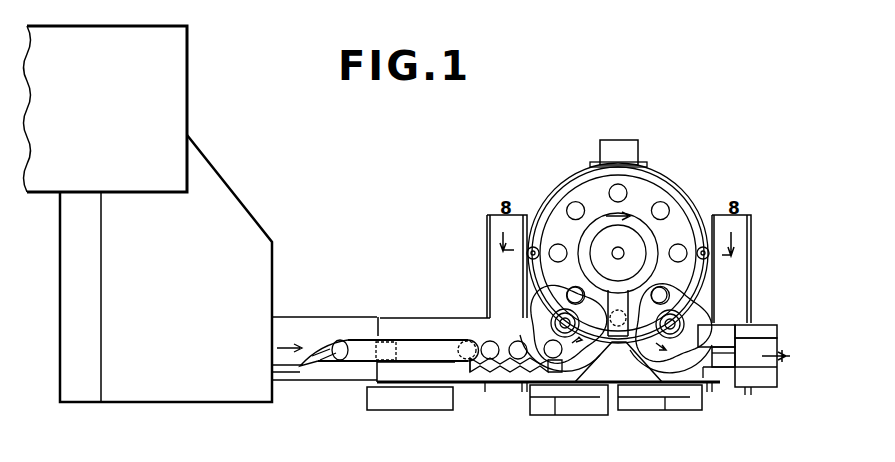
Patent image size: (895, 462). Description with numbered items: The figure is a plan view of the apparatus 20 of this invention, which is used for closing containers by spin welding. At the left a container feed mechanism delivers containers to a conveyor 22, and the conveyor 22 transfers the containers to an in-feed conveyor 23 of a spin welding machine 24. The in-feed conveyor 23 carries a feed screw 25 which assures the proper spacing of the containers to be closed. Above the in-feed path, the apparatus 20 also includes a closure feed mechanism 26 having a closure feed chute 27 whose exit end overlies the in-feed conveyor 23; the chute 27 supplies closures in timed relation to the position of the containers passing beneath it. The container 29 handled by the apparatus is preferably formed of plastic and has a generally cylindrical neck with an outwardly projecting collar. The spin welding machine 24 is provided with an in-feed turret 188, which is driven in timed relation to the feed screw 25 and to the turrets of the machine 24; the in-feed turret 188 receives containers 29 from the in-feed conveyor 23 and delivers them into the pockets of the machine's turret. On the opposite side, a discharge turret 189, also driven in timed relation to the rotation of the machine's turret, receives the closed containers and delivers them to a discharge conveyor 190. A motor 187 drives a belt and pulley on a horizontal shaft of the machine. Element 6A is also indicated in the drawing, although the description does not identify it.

The apparatus 20 is at (407, 218).
The conveyor 22 is at (325, 370).
The in-feed conveyor 23 is at (465, 388).
The spin welding machine 24 is at (686, 183).
The feed screw 25 is at (505, 374).
The closure feed mechanism 26 is at (245, 212).
The closure feed chute 27 is at (415, 340).
The container 29 is at (484, 338).
The in-feed turret 188 is at (547, 332).
The discharge turret 189 is at (690, 298).
The discharge conveyor 190 is at (745, 386).
The motor 187 is at (645, 393).
The support block 6A is at (590, 393).